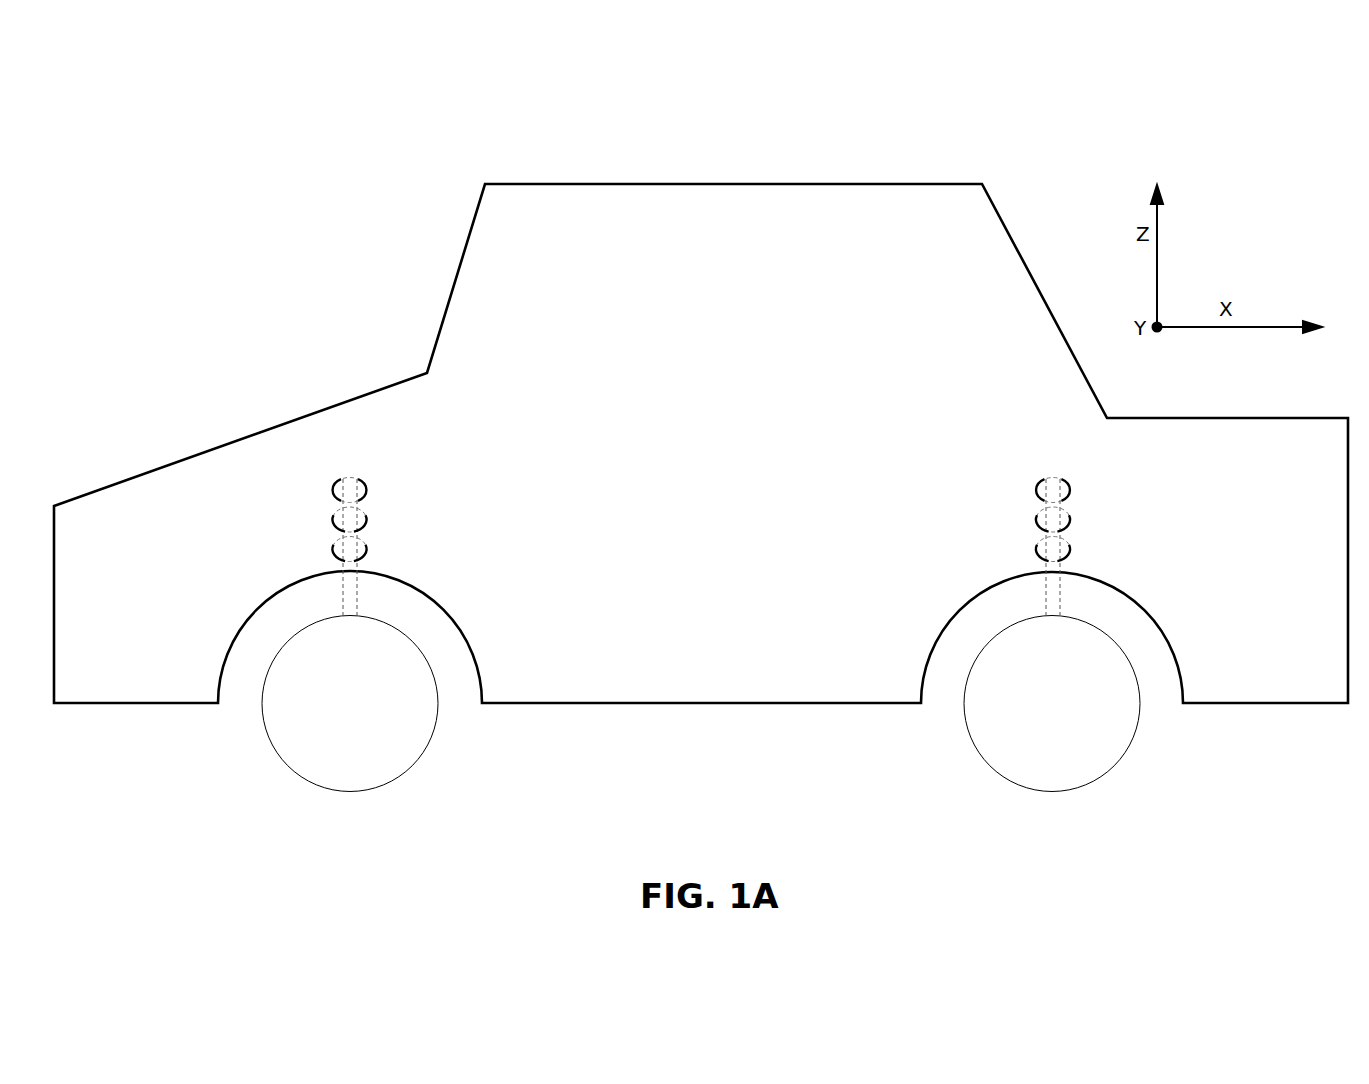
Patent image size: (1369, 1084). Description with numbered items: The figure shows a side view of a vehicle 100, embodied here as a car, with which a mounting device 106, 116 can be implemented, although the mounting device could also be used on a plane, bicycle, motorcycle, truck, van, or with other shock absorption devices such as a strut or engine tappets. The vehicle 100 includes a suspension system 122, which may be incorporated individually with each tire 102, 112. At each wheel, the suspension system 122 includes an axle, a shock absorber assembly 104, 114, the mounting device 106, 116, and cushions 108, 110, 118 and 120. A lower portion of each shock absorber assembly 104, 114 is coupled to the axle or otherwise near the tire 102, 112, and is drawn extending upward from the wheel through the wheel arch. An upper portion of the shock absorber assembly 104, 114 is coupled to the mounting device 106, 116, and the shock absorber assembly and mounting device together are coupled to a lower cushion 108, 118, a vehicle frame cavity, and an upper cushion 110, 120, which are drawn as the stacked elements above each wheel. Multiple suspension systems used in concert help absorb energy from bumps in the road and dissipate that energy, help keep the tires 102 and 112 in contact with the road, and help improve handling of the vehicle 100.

The vehicle 100 is at (759, 147).
The tire 102 is at (438, 703).
The shock absorber assembly 104 is at (344, 593).
The mounting device 106 is at (368, 552).
The lower cushion 108 is at (369, 522).
The upper cushion 110 is at (368, 492).
The tire 112 is at (965, 703).
The shock absorber assembly 114 is at (1046, 600).
The mounting device 116 is at (1038, 553).
The lower cushion 118 is at (1037, 522).
The upper cushion 120 is at (1036, 492).
The suspension system 122 is at (987, 531).